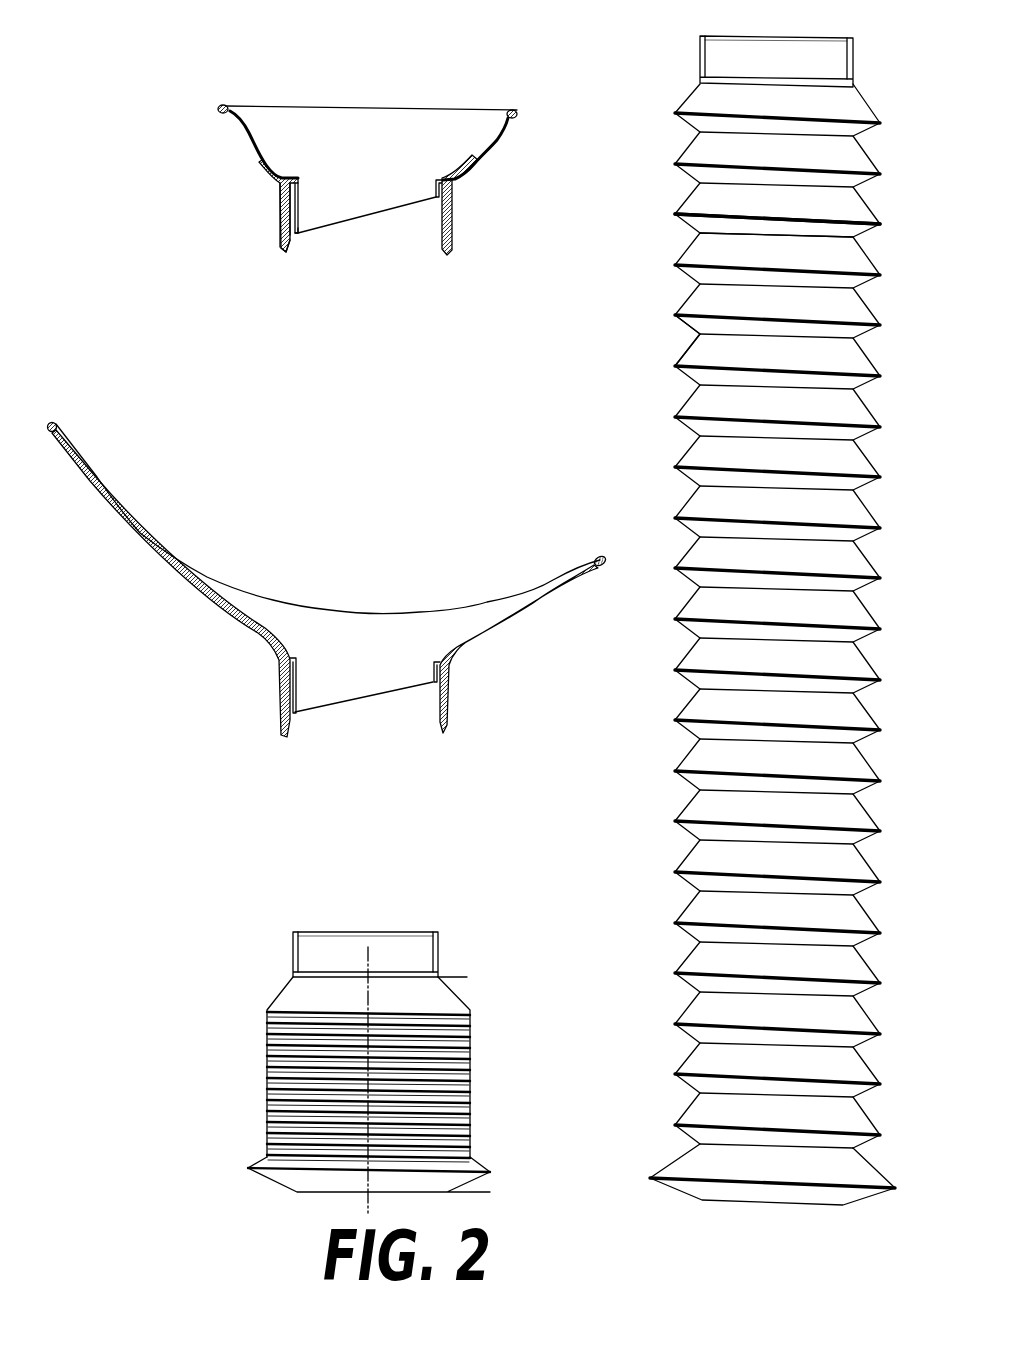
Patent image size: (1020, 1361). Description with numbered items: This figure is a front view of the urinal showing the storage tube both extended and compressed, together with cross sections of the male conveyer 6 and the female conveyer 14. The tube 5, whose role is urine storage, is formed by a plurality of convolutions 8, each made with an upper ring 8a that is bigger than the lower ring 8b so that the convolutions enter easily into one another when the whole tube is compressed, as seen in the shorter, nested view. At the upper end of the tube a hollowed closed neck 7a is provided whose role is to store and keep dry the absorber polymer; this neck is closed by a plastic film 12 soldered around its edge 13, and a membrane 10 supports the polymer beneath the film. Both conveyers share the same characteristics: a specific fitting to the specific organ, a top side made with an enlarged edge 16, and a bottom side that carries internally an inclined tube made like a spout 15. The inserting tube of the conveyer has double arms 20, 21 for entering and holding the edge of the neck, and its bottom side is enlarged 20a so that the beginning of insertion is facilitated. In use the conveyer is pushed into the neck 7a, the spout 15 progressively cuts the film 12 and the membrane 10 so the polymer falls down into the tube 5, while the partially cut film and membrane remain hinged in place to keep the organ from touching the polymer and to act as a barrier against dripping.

The tube 5 is at (697, 1008).
The male conveyer 6 is at (367, 135).
The hollowed closed neck 7a is at (315, 953).
The convolutions 8 is at (676, 364).
The upper ring 8a is at (680, 212).
The lower ring 8b is at (690, 228).
The membrane 10 is at (435, 978).
The plastic film 12 is at (380, 933).
The edge 13 is at (295, 932).
The female conveyer 14 is at (365, 630).
The spout 15 is at (367, 215).
The enlarged edge 16 is at (516, 110).
The arm 20 is at (282, 213).
The enlarged bottom side 20a is at (285, 248).
The arm 21 is at (298, 233).